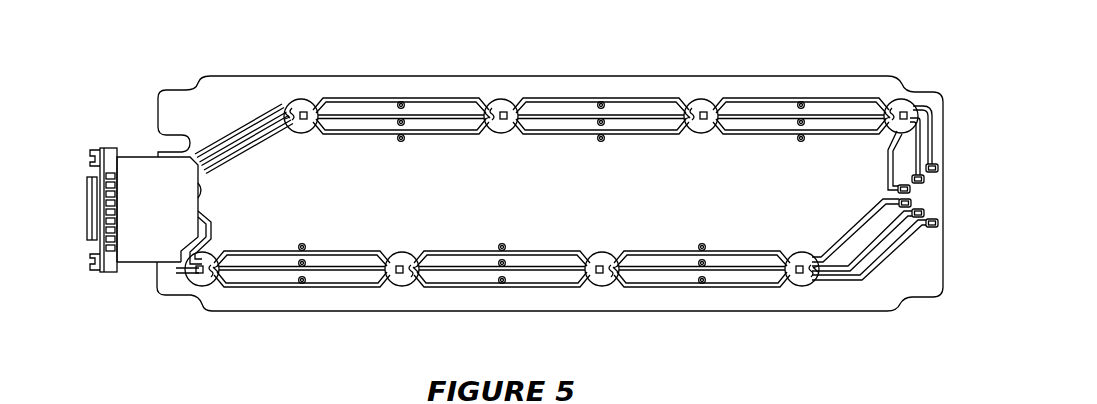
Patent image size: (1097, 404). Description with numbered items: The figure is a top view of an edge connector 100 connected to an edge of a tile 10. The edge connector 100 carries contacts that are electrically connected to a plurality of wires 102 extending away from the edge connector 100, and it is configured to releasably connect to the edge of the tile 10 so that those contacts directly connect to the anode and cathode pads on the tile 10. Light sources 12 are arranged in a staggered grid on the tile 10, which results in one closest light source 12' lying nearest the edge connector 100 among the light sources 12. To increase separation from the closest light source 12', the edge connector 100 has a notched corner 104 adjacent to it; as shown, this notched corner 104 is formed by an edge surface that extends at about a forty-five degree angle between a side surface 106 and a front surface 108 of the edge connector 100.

The tile 10 is at (287, 76).
The light sources 12 is at (527, 76).
The closest light source 12' is at (200, 319).
The edge connector 100 is at (145, 126).
The wires 102 is at (107, 147).
The notched corner 104 is at (180, 239).
The side surface 106 is at (142, 264).
The front surface 108 is at (214, 212).